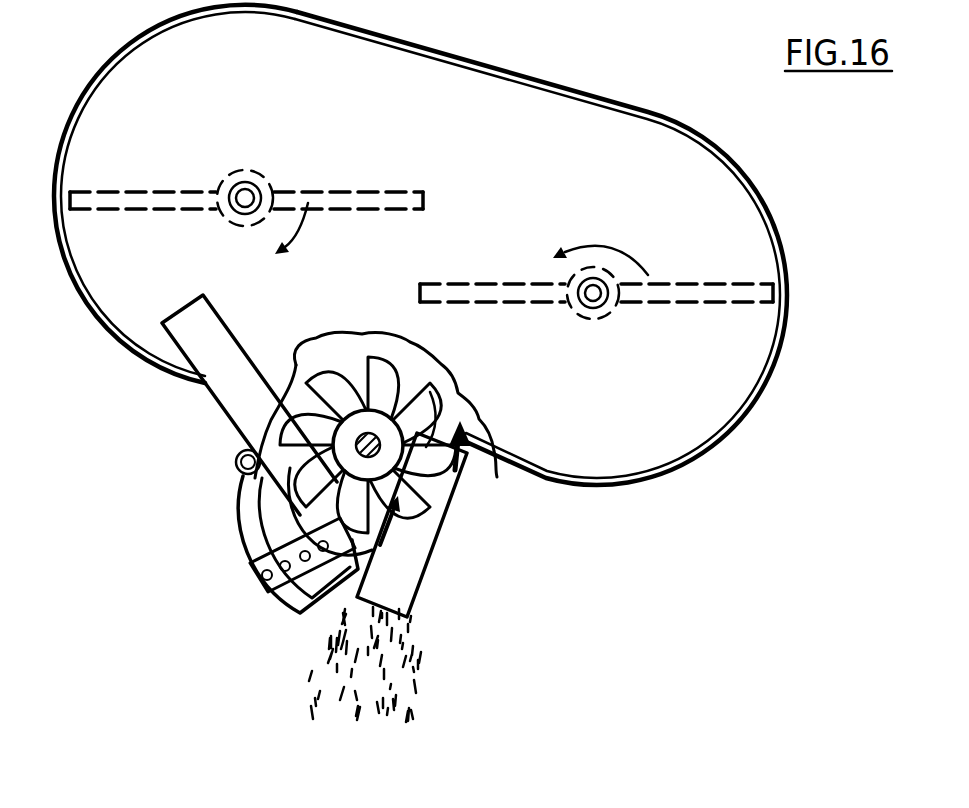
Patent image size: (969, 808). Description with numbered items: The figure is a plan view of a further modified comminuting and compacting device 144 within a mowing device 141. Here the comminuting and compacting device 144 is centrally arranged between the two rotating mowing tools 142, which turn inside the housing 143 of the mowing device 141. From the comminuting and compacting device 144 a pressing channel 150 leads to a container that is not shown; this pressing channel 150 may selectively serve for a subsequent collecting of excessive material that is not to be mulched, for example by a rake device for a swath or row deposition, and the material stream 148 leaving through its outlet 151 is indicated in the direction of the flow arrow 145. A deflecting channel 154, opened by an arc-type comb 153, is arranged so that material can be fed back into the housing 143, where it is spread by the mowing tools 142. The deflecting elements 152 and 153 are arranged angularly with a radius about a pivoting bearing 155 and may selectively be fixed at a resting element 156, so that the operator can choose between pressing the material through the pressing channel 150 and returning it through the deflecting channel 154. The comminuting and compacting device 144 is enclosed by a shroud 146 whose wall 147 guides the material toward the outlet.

The mowing device 141 is at (762, 177).
The rotating mowing tools 142 is at (97, 192).
The housing 143 is at (495, 63).
The comminuting and compacting device 144 is at (426, 371).
The air flow arrow 145 is at (440, 525).
The fan shroud 146 is at (455, 396).
The shroud wall 147 is at (447, 418).
The discharge stream 148 is at (404, 568).
The pressing channel 150 is at (430, 582).
The outlet opening 151 is at (463, 462).
The deflecting element 152 is at (262, 512).
The arc-type comb 153 is at (248, 538).
The deflecting channel 154 is at (226, 370).
The pivoting bearing 155 is at (237, 462).
The resting element 156 is at (245, 566).